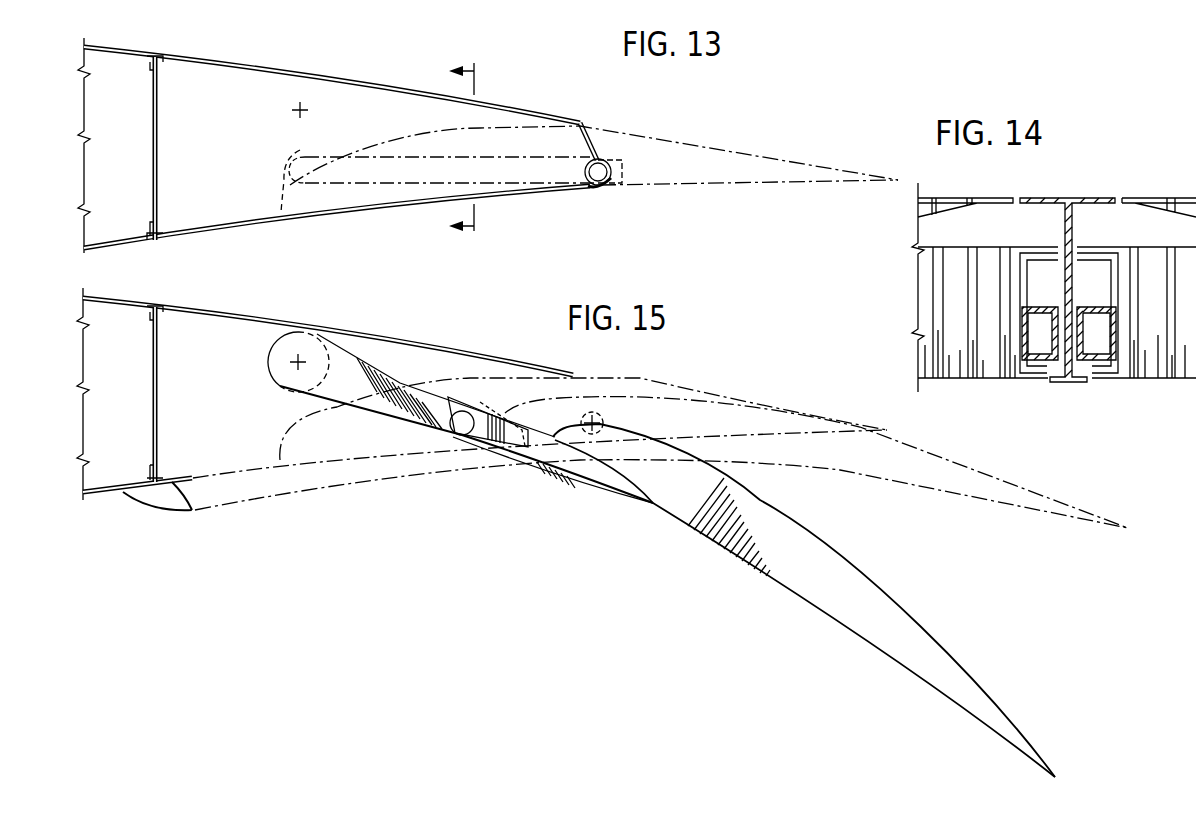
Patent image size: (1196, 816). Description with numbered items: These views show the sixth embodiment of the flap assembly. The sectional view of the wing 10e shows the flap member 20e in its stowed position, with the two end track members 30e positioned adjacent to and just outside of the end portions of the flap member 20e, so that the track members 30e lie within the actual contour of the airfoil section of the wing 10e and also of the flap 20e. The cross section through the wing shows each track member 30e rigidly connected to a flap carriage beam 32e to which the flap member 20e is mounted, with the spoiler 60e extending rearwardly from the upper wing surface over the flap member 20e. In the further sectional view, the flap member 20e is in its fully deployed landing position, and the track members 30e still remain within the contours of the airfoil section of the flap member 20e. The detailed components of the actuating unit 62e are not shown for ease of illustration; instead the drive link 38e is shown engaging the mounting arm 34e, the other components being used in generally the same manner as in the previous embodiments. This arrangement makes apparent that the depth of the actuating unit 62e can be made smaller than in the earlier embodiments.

In FIG. 13, the wing 10e is at (320, 70).
In FIG. 15, the wing 10e is at (276, 305).
In FIG. 13, the flap member 20e is at (707, 142).
In FIG. 14, the flap member 20e is at (953, 247).
In FIG. 15, the flap member 20e is at (838, 552).
In FIG. 13, the track member 30e is at (560, 160).
In FIG. 14, the track member 30e is at (1093, 366).
In FIG. 15, the track member 30e is at (592, 423).
In FIG. 14, the flap carriage beam 32e is at (1072, 225).
In FIG. 15, the mounting arm 34e is at (480, 437).
In FIG. 15, the drive link 38e is at (343, 363).
In FIG. 14, the spoiler 60e is at (960, 198).
In FIG. 13, the actuating unit 62e is at (528, 202).
In FIG. 15, the actuating unit 62e is at (515, 470).